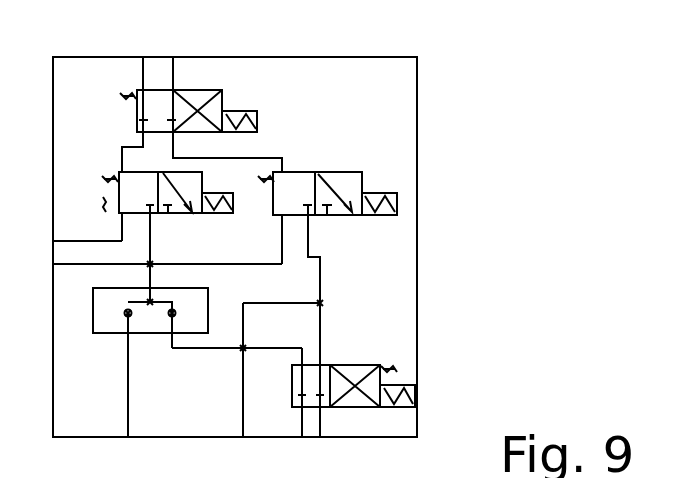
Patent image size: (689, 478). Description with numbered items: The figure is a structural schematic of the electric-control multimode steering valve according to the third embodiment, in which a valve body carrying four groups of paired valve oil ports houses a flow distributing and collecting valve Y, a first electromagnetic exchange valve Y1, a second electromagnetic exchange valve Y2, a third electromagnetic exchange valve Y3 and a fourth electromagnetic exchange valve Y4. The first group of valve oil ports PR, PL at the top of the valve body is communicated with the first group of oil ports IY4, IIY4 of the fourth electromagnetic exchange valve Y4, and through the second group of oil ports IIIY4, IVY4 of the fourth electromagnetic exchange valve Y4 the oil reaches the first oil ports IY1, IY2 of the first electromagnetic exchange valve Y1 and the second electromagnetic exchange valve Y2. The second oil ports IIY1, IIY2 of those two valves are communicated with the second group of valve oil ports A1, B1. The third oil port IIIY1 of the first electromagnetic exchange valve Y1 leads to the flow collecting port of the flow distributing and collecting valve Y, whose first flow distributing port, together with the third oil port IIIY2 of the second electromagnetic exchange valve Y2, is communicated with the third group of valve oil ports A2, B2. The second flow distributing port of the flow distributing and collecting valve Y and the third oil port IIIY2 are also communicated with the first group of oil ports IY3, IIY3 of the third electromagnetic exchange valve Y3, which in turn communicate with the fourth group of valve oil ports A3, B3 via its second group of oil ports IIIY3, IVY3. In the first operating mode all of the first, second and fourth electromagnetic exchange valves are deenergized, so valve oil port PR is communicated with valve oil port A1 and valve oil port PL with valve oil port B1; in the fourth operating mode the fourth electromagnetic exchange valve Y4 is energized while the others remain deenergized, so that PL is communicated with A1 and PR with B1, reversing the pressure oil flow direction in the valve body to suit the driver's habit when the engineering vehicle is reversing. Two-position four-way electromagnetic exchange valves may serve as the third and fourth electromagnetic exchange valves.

The valve oil port PR is at (128, 98).
The valve oil port PL is at (219, 98).
The first electromagnetic exchange valve Y1 is at (154, 194).
The second electromagnetic exchange valve Y2 is at (327, 193).
The third electromagnetic exchange valve Y3 is at (353, 371).
The fourth electromagnetic exchange valve Y4 is at (195, 105).
The flow distributing and collecting valve Y is at (138, 317).
The valve oil port A1 is at (66, 234).
The valve oil port B1 is at (146, 269).
The valve oil port A2 is at (130, 392).
The valve oil port B2 is at (246, 387).
The valve oil port A3 is at (290, 439).
The valve oil port B3 is at (335, 439).
The first oil port of the first electromagnetic exchange valve IY1 is at (106, 158).
The second oil port of the first electromagnetic exchange valve IIY1 is at (105, 228).
The third oil port of the first electromagnetic exchange valve IIIY1 is at (171, 253).
The first oil port of the second electromagnetic exchange valve IY2 is at (294, 164).
The second oil port of the second electromagnetic exchange valve IIY2 is at (263, 239).
The third oil port of the second electromagnetic exchange valve IIIY2 is at (329, 285).
The first oil port of the third electromagnetic exchange valve IY3 is at (281, 363).
The second oil port of the third electromagnetic exchange valve IIY3 is at (338, 343).
The third oil port of the third electromagnetic exchange valve IIIY3 is at (280, 401).
The fourth oil port of the third electromagnetic exchange valve IVY3 is at (340, 401).
The first oil port of the fourth electromagnetic exchange valve IY4 is at (128, 76).
The second oil port of the fourth electromagnetic exchange valve IIY4 is at (190, 76).
The third oil port of the fourth electromagnetic exchange valve IIIY4 is at (117, 131).
The fourth oil port of the fourth electromagnetic exchange valve IVY4 is at (192, 146).